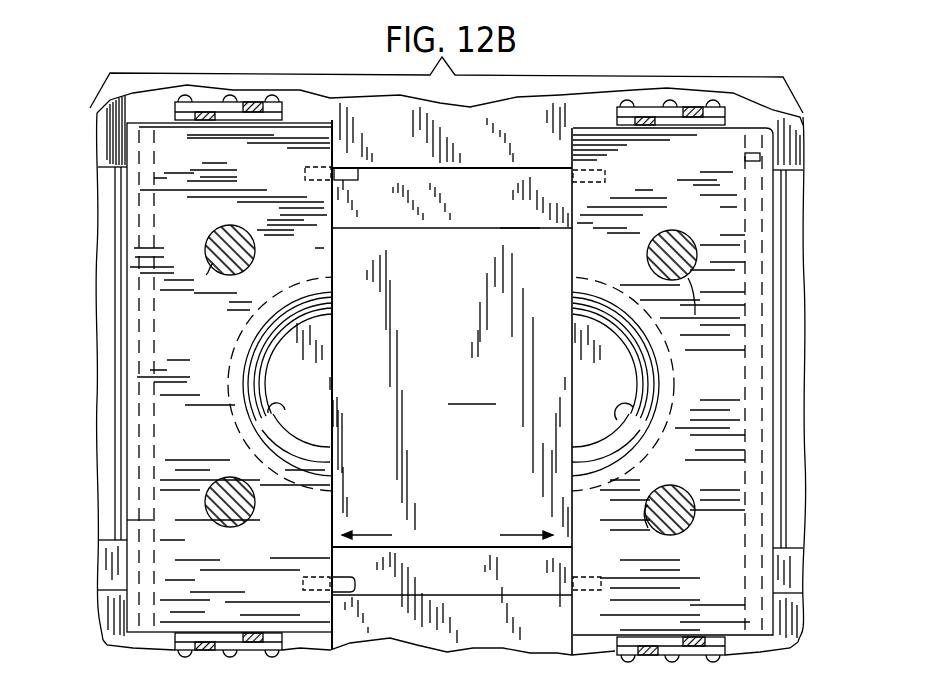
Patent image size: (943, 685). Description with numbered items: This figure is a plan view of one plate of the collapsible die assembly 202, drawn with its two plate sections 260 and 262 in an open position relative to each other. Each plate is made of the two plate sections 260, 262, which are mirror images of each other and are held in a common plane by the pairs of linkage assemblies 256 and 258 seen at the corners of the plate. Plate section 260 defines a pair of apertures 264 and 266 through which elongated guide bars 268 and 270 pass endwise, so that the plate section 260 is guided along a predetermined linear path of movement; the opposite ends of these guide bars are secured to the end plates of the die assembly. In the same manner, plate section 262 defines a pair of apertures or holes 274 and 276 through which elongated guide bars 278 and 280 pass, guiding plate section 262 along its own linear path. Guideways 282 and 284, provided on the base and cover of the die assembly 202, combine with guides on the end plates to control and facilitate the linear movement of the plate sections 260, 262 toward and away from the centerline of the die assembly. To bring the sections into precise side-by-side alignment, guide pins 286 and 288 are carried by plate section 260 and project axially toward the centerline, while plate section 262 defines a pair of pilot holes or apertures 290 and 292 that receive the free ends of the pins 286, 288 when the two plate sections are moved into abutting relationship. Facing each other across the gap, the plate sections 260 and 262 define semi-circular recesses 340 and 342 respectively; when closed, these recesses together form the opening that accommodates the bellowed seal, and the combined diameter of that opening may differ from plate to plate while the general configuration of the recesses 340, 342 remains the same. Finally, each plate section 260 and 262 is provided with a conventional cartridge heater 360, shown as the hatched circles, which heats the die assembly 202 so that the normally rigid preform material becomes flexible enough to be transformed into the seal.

The die assembly 202 is at (452, 379).
The linkage assembly 256 is at (165, 103).
The linkage assembly 258 is at (737, 116).
The plate section 260 is at (220, 353).
The plate section 262 is at (721, 228).
The aperture 264 is at (145, 520).
The aperture 266 is at (249, 271).
The guide bar 268 is at (245, 513).
The guide bar 270 is at (217, 257).
The aperture 274 is at (670, 532).
The aperture 276 is at (653, 257).
The guide bar 278 is at (648, 528).
The guide bar 280 is at (688, 280).
The guideway 282 is at (464, 547).
The guideway 284 is at (517, 223).
The guide pin 286 is at (340, 592).
The guide pin 288 is at (367, 173).
The pilot hole 290 is at (568, 590).
The pilot hole 292 is at (607, 173).
The semi-circular recess 340 is at (282, 408).
The semi-circular recess 342 is at (633, 425).
The cartridge heater 360 is at (112, 400).